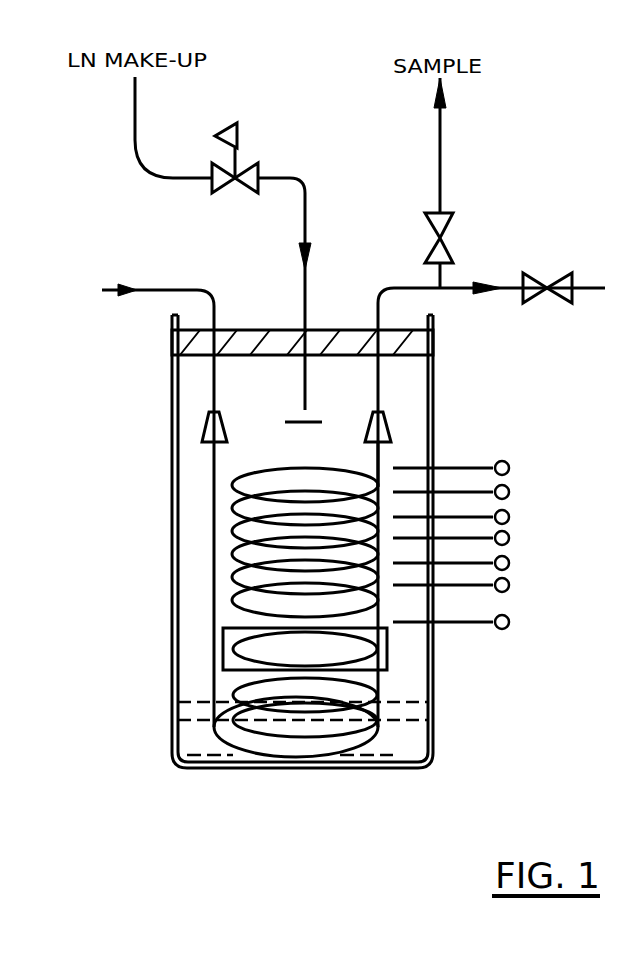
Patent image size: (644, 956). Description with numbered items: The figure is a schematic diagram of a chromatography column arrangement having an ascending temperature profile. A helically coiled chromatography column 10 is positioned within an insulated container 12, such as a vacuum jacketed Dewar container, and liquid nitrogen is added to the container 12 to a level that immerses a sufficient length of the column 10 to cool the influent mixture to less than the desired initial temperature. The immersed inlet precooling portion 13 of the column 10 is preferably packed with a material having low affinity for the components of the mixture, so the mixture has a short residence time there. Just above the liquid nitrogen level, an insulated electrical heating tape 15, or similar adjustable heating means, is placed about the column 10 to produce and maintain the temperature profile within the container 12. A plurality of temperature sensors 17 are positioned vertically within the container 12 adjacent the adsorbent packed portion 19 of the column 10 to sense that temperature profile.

The helically coiled chromatography column 10 is at (214, 587).
The insulated container 12 is at (172, 653).
The inlet precooling portion 13 is at (350, 730).
The insulated electrical heating tape 15 is at (387, 648).
The temperature sensors 17 is at (520, 452).
The adsorbent packed portion 19 is at (240, 533).